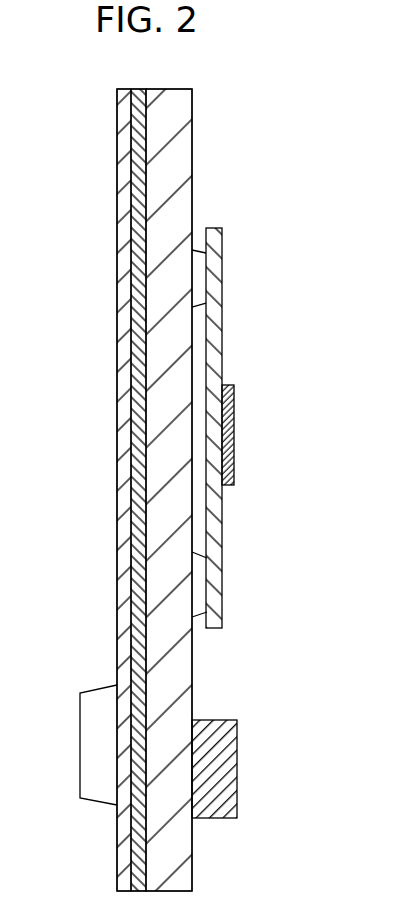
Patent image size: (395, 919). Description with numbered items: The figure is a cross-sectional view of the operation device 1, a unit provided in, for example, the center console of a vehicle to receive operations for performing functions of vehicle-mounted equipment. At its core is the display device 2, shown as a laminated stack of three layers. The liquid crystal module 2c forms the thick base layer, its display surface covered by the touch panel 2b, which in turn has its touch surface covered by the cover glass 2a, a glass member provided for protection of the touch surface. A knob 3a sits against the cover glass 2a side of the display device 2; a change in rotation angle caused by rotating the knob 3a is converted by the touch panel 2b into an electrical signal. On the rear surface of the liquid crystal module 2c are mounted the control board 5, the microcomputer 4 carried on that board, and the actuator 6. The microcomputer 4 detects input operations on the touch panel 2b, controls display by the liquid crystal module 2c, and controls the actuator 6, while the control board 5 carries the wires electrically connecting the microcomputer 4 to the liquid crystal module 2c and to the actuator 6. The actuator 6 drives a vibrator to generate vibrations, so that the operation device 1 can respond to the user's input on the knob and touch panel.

The operation device 1 is at (98, 113).
The display device 2 is at (67, 497).
The cover glass 2a is at (127, 508).
The touch panel 2b is at (137, 549).
The liquid crystal module 2c is at (157, 586).
The knob 3a is at (92, 748).
The microcomputer 4 is at (234, 413).
The control board 5 is at (222, 252).
The actuator 6 is at (237, 775).